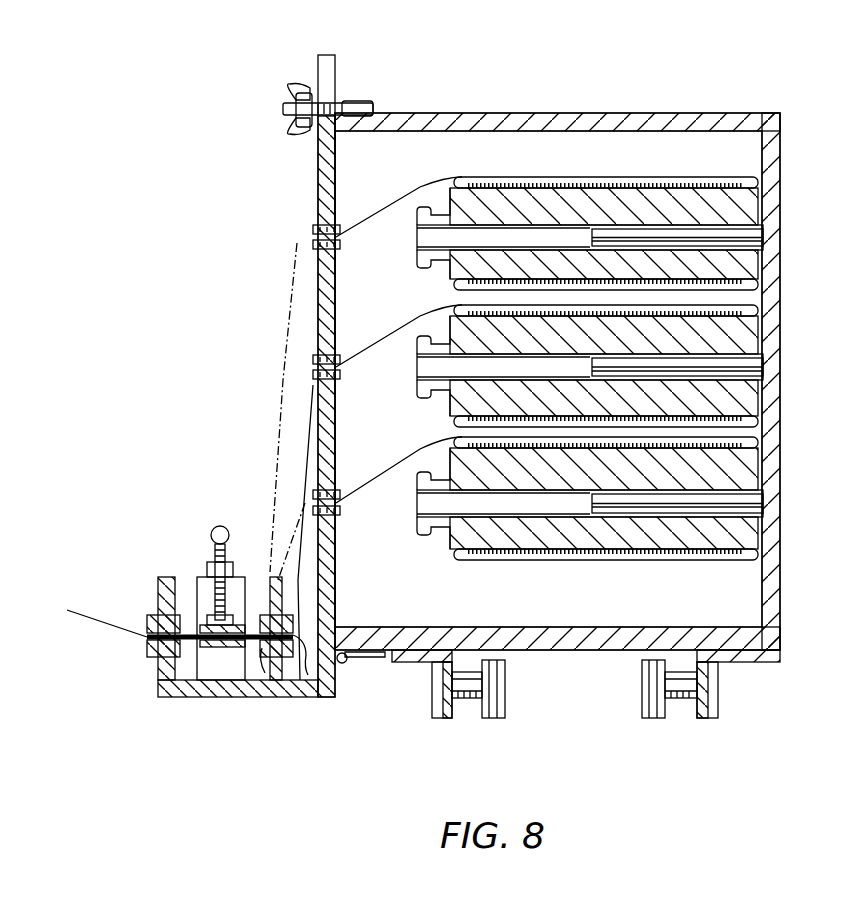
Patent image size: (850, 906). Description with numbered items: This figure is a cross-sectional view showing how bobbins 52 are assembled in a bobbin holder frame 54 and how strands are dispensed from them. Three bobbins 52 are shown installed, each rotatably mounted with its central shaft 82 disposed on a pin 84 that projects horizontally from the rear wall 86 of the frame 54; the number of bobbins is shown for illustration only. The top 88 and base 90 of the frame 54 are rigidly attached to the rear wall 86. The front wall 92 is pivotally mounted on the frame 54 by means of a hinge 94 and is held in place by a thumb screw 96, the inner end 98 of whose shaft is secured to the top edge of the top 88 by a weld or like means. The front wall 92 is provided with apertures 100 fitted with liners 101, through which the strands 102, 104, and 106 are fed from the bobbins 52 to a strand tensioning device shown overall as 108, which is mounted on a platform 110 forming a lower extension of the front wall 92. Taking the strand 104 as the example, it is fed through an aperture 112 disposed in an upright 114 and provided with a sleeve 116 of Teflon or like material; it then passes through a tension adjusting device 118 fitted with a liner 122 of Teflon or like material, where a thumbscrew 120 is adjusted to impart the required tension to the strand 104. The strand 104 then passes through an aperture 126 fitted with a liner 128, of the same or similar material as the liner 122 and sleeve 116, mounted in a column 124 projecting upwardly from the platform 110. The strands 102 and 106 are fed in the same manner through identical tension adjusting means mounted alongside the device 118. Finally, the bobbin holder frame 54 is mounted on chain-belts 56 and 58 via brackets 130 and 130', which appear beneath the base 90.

The bobbin 52 is at (640, 200).
The frame 54 is at (553, 90).
The chain-belt 56 is at (467, 718).
The chain-belt 58 is at (640, 690).
The central shaft 82 is at (557, 240).
The pin 84 is at (765, 235).
The rear wall 86 is at (782, 583).
The top 88 is at (645, 113).
The base 90 is at (568, 652).
The front wall 92 is at (316, 183).
The hinge 94 is at (350, 672).
The thumb screw 96 is at (283, 92).
The inner end 98 is at (345, 102).
The aperture 100 is at (313, 237).
The liner 101 is at (313, 250).
The strand 102 is at (385, 197).
The strand 104 is at (395, 333).
The strand 106 is at (380, 473).
The strand tensioning device 108 is at (136, 560).
The platform 110 is at (205, 700).
The aperture 112 is at (330, 685).
The upright 114 is at (305, 693).
The sleeve 116 is at (248, 688).
The tension adjusting device 118 is at (200, 692).
The thumbscrew 120 is at (217, 527).
The liner 122 is at (197, 603).
The column 124 is at (158, 680).
The aperture 126 is at (145, 620).
The liner 128 is at (145, 652).
The bracket 130 is at (417, 706).
The bracket 130' is at (738, 704).